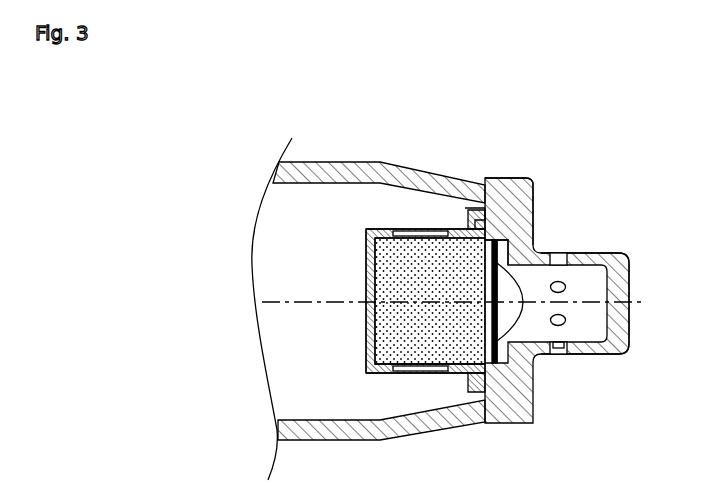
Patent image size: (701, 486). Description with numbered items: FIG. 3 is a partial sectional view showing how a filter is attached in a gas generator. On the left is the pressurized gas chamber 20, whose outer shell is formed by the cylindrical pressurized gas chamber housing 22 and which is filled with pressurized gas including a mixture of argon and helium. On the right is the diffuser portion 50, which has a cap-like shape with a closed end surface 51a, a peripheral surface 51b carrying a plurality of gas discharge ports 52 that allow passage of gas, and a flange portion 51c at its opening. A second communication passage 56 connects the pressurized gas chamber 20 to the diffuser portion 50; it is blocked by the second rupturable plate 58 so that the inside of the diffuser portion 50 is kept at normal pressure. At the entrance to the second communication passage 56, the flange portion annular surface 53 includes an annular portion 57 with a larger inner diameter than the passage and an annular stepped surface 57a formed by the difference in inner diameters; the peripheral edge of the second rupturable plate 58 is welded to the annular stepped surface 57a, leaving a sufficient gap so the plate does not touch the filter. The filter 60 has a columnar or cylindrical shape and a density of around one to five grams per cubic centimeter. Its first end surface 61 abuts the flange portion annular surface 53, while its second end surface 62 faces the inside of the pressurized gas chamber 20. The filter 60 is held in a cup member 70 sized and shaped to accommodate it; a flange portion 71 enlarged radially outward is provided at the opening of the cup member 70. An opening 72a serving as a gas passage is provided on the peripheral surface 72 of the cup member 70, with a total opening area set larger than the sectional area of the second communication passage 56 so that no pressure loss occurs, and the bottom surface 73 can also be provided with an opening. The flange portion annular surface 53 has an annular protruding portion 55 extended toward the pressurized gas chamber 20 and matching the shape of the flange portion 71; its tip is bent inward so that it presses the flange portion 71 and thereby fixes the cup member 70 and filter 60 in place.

The pressurized gas chamber 20 is at (296, 279).
The pressurized gas chamber housing 22 is at (312, 170).
The diffuser portion 50 is at (548, 163).
The closed end surface 51a is at (590, 253).
The peripheral surface 51b is at (597, 357).
The flange portion 51c is at (505, 180).
The gas discharge ports 52 is at (560, 354).
The flange portion annular surface 53 is at (471, 205).
The annular protruding portion 55 is at (465, 216).
The second communication passage 56 is at (597, 314).
The annular portion 57 is at (500, 352).
The annular stepped surface 57a is at (496, 228).
The second rupturable plate 58 is at (545, 332).
The filter 60 is at (375, 302).
The first end surface 61 is at (530, 245).
The second end surface 62 is at (370, 290).
The cup member 70 is at (361, 263).
The flange portion 71 is at (480, 400).
The peripheral surface 72 is at (378, 230).
The opening 72a is at (404, 373).
The bottom surface 73 is at (366, 343).